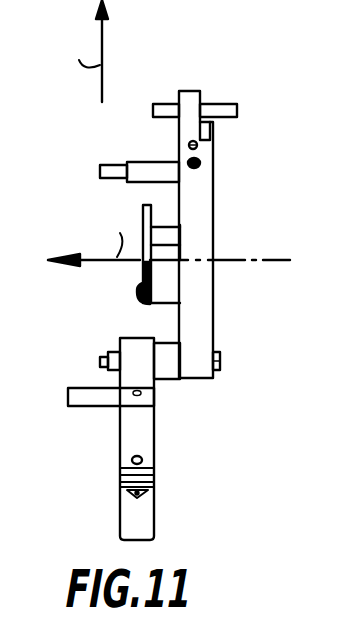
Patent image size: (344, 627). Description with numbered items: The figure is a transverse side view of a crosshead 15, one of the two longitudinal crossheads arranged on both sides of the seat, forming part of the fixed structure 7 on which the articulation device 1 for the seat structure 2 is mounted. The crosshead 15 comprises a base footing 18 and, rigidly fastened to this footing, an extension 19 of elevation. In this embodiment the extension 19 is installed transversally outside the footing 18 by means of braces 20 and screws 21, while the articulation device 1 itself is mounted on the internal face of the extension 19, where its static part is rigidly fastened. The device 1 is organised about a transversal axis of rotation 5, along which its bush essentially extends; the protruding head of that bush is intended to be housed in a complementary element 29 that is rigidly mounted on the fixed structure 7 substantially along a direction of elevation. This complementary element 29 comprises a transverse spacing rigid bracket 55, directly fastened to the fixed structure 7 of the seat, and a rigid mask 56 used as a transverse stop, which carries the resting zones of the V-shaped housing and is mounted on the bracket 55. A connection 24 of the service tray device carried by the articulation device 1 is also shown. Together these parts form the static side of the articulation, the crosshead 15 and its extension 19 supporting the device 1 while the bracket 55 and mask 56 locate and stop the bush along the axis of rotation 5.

The articulation device 1 is at (128, 202).
The seat structure 2 is at (88, 120).
The axis of rotation 5 is at (169, 237).
The fixed structure 7 is at (184, 105).
The crosshead 15 is at (105, 379).
The base footing 18 is at (155, 439).
The extension 19 is at (196, 199).
The brace 20 is at (168, 370).
The screw 21 is at (220, 358).
The connection 24 is at (152, 168).
The complementary element 29 is at (190, 237).
The transverse spacing rigid bracket 55 is at (165, 281).
The rigid mask 56 is at (139, 281).